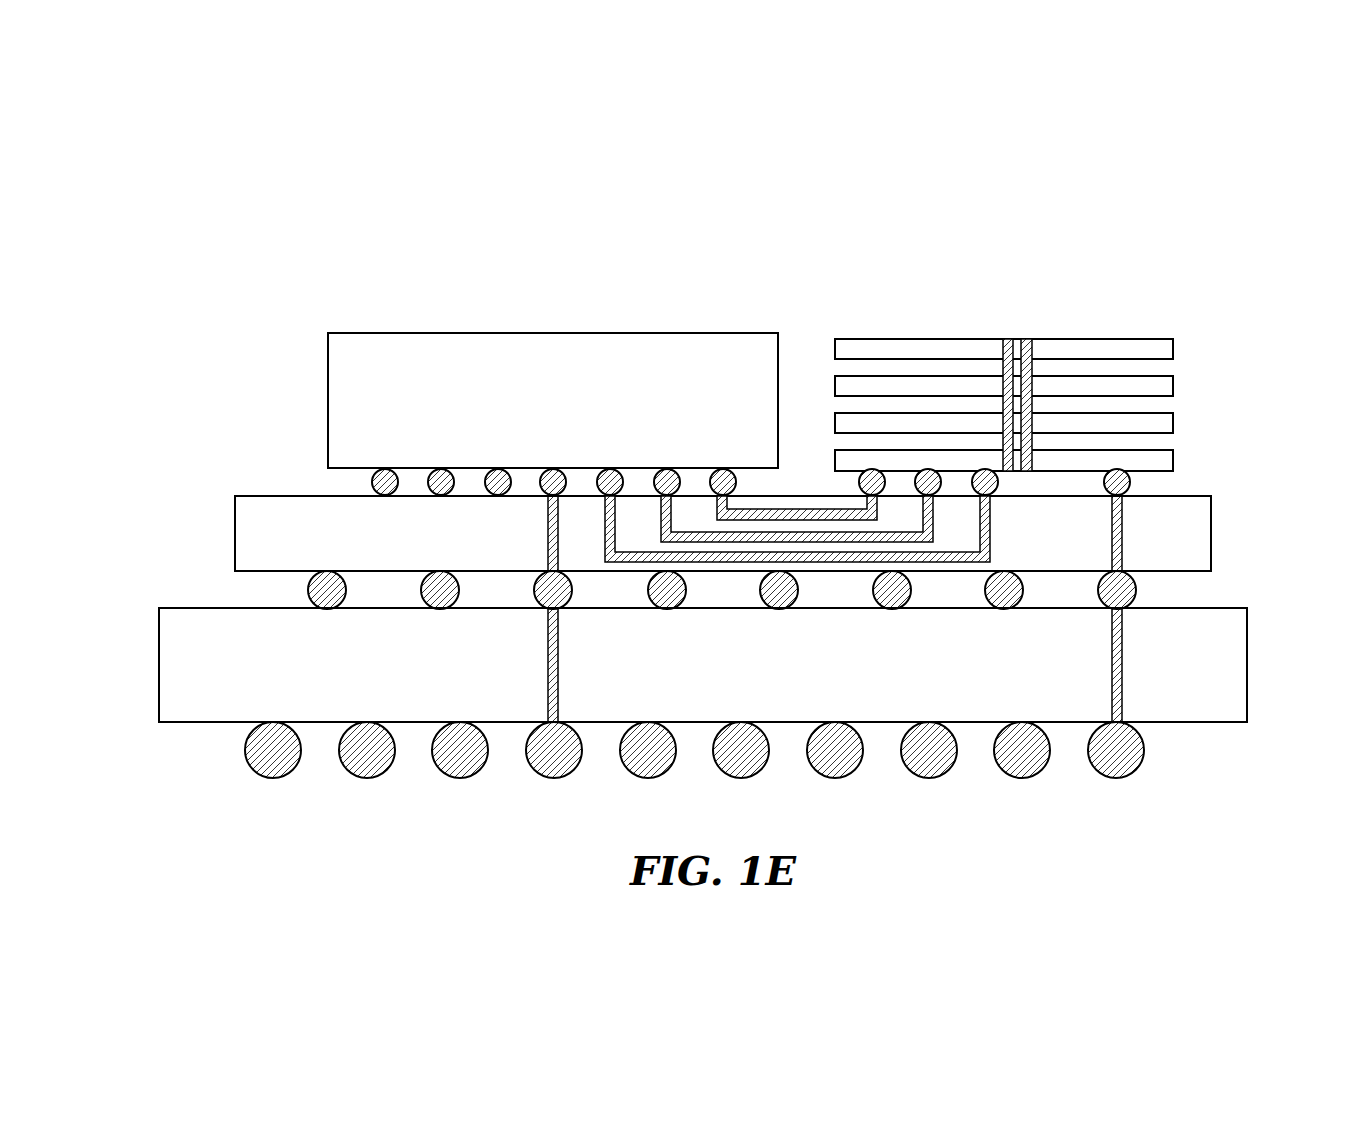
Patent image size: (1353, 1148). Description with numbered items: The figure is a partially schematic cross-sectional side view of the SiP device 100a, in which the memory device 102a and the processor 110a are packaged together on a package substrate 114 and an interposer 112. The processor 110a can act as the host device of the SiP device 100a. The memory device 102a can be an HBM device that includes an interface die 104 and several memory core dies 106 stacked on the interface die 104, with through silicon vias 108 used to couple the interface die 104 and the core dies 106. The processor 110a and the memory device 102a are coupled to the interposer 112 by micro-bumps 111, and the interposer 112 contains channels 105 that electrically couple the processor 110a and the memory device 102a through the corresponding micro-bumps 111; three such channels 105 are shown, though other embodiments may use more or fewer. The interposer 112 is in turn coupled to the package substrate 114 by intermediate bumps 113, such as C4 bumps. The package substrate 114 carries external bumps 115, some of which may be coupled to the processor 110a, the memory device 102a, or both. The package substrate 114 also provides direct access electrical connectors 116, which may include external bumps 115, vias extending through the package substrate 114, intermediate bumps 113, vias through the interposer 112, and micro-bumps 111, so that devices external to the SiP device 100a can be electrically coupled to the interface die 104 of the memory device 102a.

The SiP device 100a is at (736, 165).
The memory device 102a is at (1028, 363).
The interface die 104 is at (1203, 463).
The channels 105 is at (990, 518).
The memory core dies 106 is at (1183, 339).
The through silicon vias 108 is at (897, 383).
The processor 110a is at (387, 346).
The micro-bumps 111 is at (372, 488).
The interposer 112 is at (240, 519).
The intermediate bumps 113 is at (300, 598).
The package substrate 114 is at (159, 634).
The external bumps 115 is at (255, 762).
The direct access electrical connectors 116 is at (1120, 660).